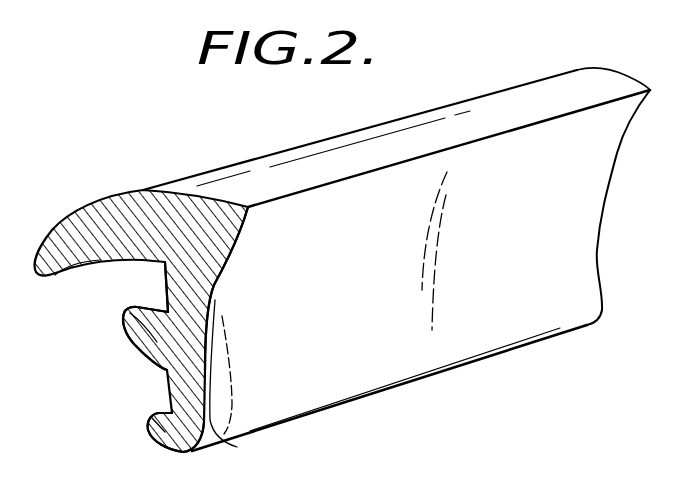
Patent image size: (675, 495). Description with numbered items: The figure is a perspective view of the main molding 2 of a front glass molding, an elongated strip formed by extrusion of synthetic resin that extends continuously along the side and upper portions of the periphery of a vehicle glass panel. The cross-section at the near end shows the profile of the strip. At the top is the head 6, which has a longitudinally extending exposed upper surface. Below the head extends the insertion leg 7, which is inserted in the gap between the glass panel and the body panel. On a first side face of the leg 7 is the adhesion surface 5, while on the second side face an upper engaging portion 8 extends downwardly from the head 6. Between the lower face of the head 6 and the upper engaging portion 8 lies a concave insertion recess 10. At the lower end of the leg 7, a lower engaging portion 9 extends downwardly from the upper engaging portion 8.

The main molding 2 is at (478, 98).
The adhesion surface 5 is at (207, 338).
The head 6 is at (143, 190).
The insertion leg 7 is at (213, 276).
The upper engaging portion 8 is at (120, 323).
The lower engaging portion 9 is at (153, 437).
The insertion recess 10 is at (160, 302).